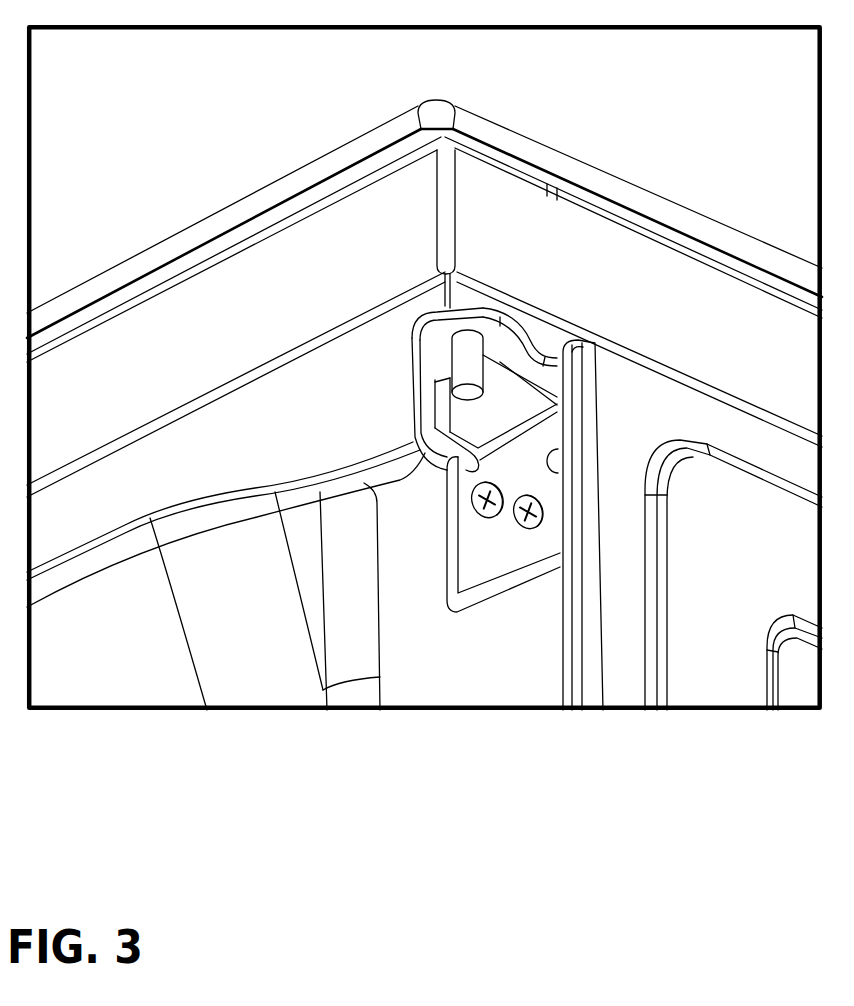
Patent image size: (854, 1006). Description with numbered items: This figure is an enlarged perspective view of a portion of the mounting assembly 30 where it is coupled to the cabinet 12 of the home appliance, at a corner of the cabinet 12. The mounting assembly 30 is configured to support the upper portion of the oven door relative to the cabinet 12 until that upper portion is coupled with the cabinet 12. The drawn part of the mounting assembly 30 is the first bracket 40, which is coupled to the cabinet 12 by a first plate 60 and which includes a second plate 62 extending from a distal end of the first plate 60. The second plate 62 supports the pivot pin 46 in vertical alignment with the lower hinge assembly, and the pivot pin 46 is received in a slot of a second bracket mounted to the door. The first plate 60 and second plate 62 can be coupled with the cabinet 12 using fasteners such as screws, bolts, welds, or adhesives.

The cabinet 12 is at (457, 677).
The mounting assembly 30 is at (390, 331).
The first bracket 40 is at (548, 349).
The pivot pin 46 is at (463, 363).
The first plate 60 is at (510, 548).
The second plate 62 is at (427, 343).